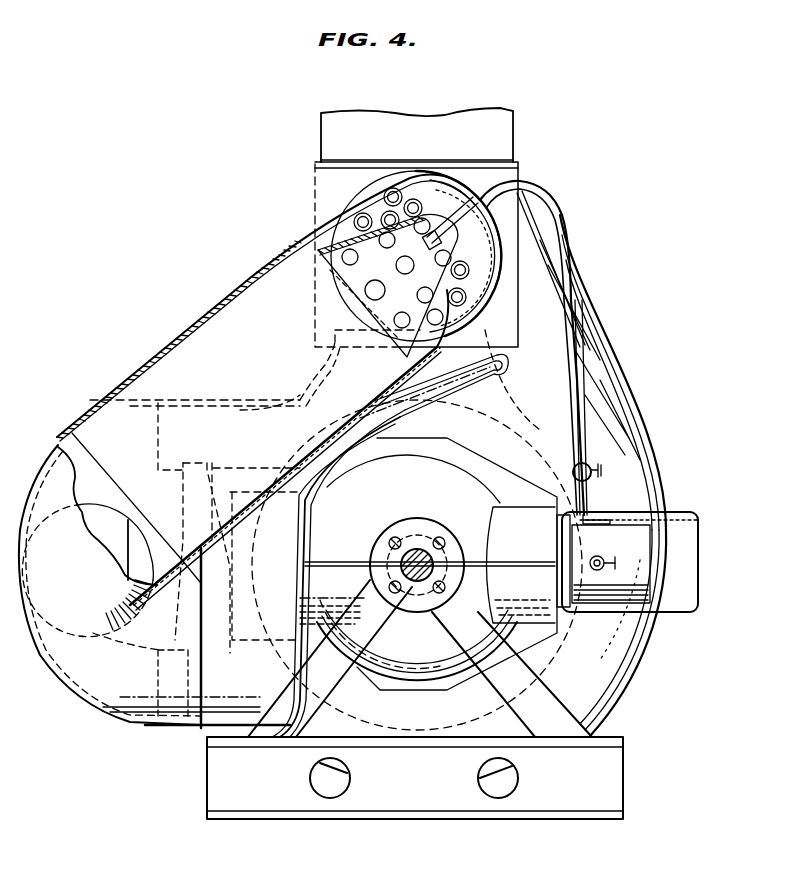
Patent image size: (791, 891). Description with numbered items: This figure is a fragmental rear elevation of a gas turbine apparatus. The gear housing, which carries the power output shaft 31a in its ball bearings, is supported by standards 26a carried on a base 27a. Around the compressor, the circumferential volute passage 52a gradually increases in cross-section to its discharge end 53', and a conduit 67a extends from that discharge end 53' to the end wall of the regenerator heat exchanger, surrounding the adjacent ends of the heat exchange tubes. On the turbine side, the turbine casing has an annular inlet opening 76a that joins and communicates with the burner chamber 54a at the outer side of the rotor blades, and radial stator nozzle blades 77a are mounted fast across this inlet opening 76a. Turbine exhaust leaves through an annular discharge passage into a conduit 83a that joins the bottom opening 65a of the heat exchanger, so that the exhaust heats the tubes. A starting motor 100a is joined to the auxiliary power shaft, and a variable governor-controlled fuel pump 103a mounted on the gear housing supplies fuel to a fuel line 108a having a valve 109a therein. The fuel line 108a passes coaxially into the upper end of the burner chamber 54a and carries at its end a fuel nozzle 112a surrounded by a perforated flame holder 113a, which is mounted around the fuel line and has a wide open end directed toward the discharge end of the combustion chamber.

The burner chamber 54a is at (243, 287).
The annular inlet opening 76a is at (132, 424).
The radial stator nozzle blades 77a is at (158, 727).
The conduit 83a is at (293, 418).
The bottom opening 65a is at (360, 368).
The perforated flame holder 113a is at (330, 247).
The fuel nozzle 112a is at (388, 285).
The fuel line 108a is at (565, 222).
The conduit 67a is at (614, 353).
The valve 109a is at (597, 478).
The discharge end 53' is at (480, 565).
The variable governor-controlled fuel pump 103a is at (640, 540).
The starting motor 100a is at (688, 592).
The power output shaft 31a is at (425, 553).
The standards 26a is at (322, 690).
The circumferential volute passage 52a is at (617, 697).
The base 27a is at (620, 778).